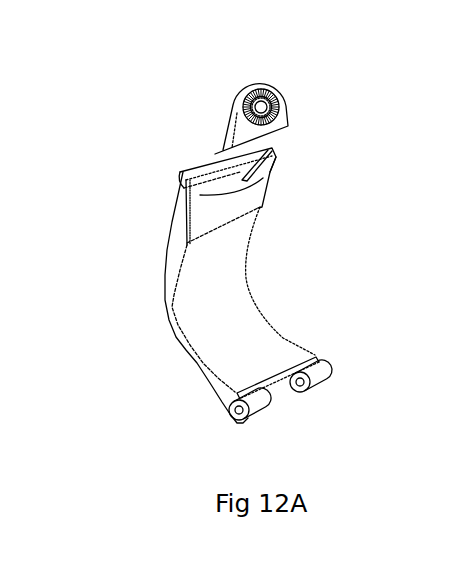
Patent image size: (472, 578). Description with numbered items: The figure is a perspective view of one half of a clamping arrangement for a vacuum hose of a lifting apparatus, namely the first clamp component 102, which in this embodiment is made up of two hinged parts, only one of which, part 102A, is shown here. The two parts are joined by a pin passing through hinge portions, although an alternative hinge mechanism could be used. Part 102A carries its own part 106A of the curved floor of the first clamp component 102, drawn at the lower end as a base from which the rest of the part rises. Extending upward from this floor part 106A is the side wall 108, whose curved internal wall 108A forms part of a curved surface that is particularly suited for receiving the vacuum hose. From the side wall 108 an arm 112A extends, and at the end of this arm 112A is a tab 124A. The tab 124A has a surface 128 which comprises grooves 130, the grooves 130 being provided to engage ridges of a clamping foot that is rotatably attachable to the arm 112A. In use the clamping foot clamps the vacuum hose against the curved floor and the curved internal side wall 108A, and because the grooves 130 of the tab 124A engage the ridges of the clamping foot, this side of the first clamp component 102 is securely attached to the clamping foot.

The first clamp component 102 is at (358, 118).
The hinged part 102A is at (171, 366).
The part of the floor 106A is at (280, 355).
The side wall 108 is at (172, 233).
The curved internal wall 108A is at (237, 272).
The arm 112A is at (220, 150).
The tab 124A is at (287, 112).
The surface 128 is at (293, 165).
The grooves 130 is at (259, 80).